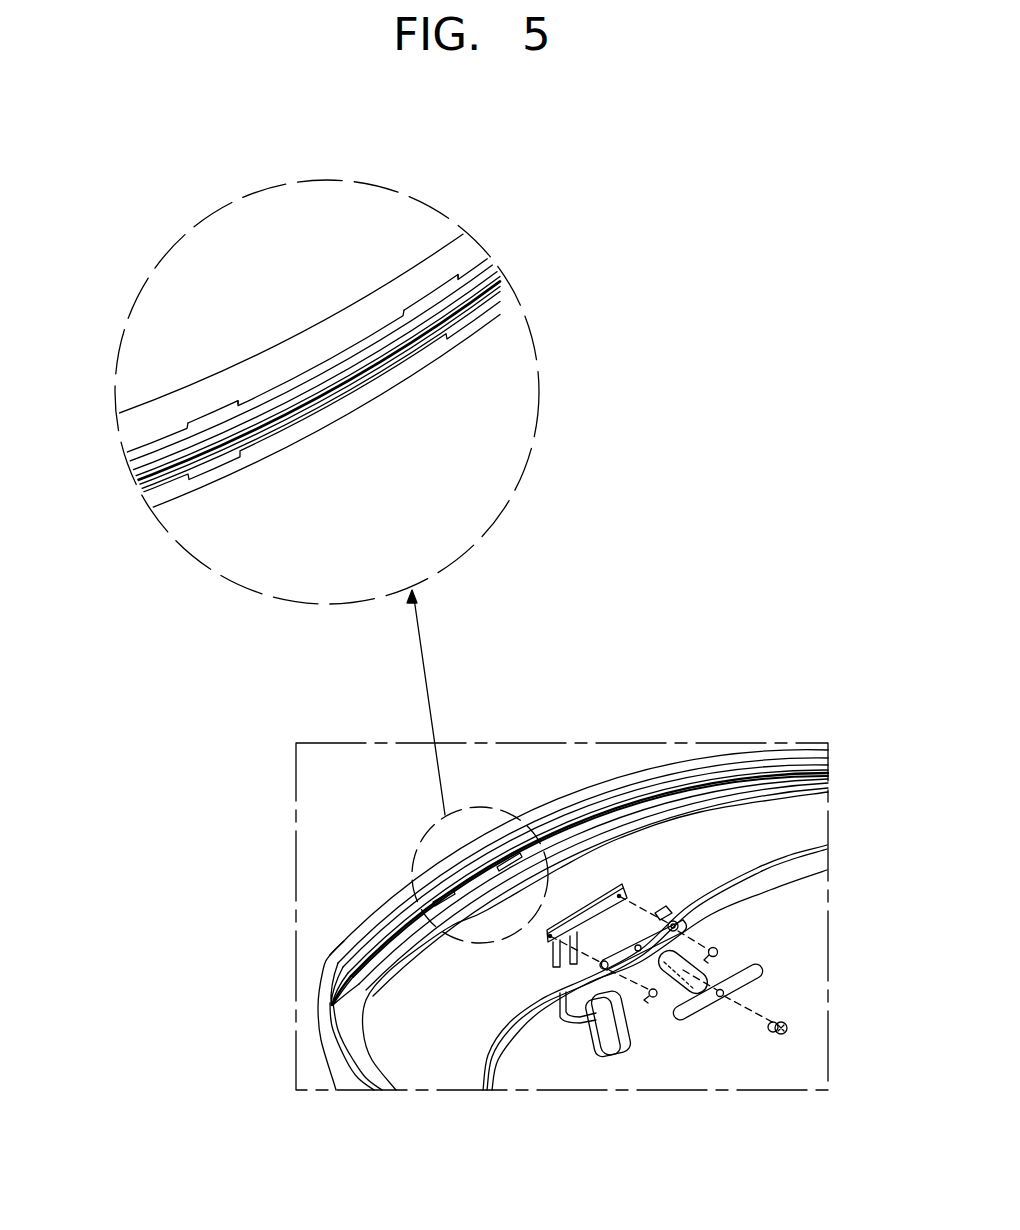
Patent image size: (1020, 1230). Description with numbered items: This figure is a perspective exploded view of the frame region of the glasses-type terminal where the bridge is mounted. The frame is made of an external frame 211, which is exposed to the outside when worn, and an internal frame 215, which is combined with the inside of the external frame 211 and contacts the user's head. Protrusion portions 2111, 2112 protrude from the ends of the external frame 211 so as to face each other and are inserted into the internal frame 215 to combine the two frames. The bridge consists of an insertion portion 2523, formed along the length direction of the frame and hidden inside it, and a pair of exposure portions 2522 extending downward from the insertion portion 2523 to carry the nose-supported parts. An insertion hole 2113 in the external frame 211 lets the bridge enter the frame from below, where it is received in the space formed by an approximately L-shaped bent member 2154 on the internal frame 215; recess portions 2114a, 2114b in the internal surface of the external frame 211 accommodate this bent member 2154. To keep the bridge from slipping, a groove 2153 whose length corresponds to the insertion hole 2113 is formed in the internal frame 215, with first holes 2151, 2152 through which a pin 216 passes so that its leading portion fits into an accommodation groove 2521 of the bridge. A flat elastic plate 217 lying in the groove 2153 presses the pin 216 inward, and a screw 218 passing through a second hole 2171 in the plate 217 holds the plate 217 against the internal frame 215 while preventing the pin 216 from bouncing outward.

The external frame 211 is at (171, 417).
The protrusion portion 2111 is at (292, 378).
The protrusion portion 2112 is at (395, 372).
The insertion hole 2113 is at (208, 463).
The recess portion 2114a is at (210, 423).
The recess portion 2114b is at (438, 300).
The internal frame 215 is at (803, 868).
The first hole 2151 is at (612, 963).
The first hole 2152 is at (640, 950).
The groove 2153 is at (680, 928).
The bent member 2154 is at (590, 950).
The pin 216 is at (722, 952).
The plate 217 is at (757, 973).
The second hole 2171 is at (722, 993).
The screw 218 is at (787, 1031).
The accommodation groove 2521 is at (543, 933).
The exposure portion 2522 is at (553, 968).
The insertion portion 2523 is at (583, 903).